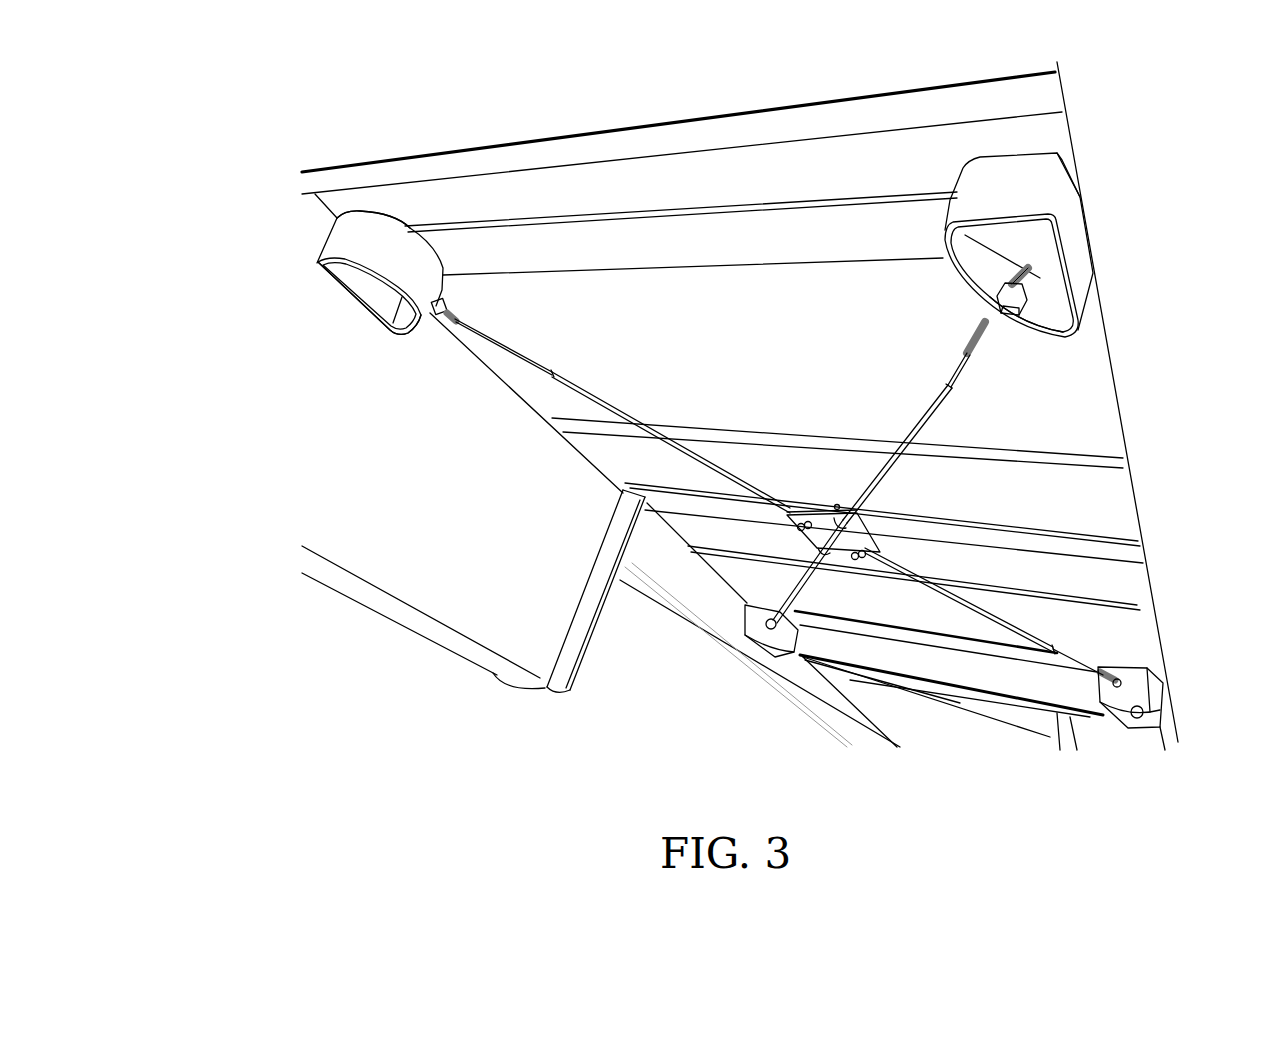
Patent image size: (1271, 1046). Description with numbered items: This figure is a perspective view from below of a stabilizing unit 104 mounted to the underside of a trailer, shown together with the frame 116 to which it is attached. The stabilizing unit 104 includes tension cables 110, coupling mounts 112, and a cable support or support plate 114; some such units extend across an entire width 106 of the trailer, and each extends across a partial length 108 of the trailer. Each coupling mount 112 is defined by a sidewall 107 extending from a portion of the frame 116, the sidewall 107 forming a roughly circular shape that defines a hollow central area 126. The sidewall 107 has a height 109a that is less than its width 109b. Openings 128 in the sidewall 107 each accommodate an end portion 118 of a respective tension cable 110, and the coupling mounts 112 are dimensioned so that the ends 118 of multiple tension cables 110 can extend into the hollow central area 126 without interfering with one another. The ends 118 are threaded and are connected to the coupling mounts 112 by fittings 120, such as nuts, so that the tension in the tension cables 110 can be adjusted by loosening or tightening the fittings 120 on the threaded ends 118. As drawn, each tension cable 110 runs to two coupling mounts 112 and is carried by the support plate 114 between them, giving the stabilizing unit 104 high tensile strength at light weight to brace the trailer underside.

The stabilizing unit 104 is at (708, 398).
The width of the trailer 106 is at (690, 120).
The sidewall 107 is at (341, 225).
The length of the trailer 108 is at (1133, 503).
The height of the sidewall 109a is at (322, 248).
The width of the sidewall 109b is at (340, 287).
The tension cable 110 is at (582, 388).
The coupling mount 112 is at (388, 262).
The support plate 114 is at (857, 537).
The frame 116 is at (520, 243).
The end portion of the tension cable 118 is at (447, 317).
The fitting 120 is at (1027, 298).
The hollow central area 126 is at (1013, 253).
The opening 128 is at (1008, 307).